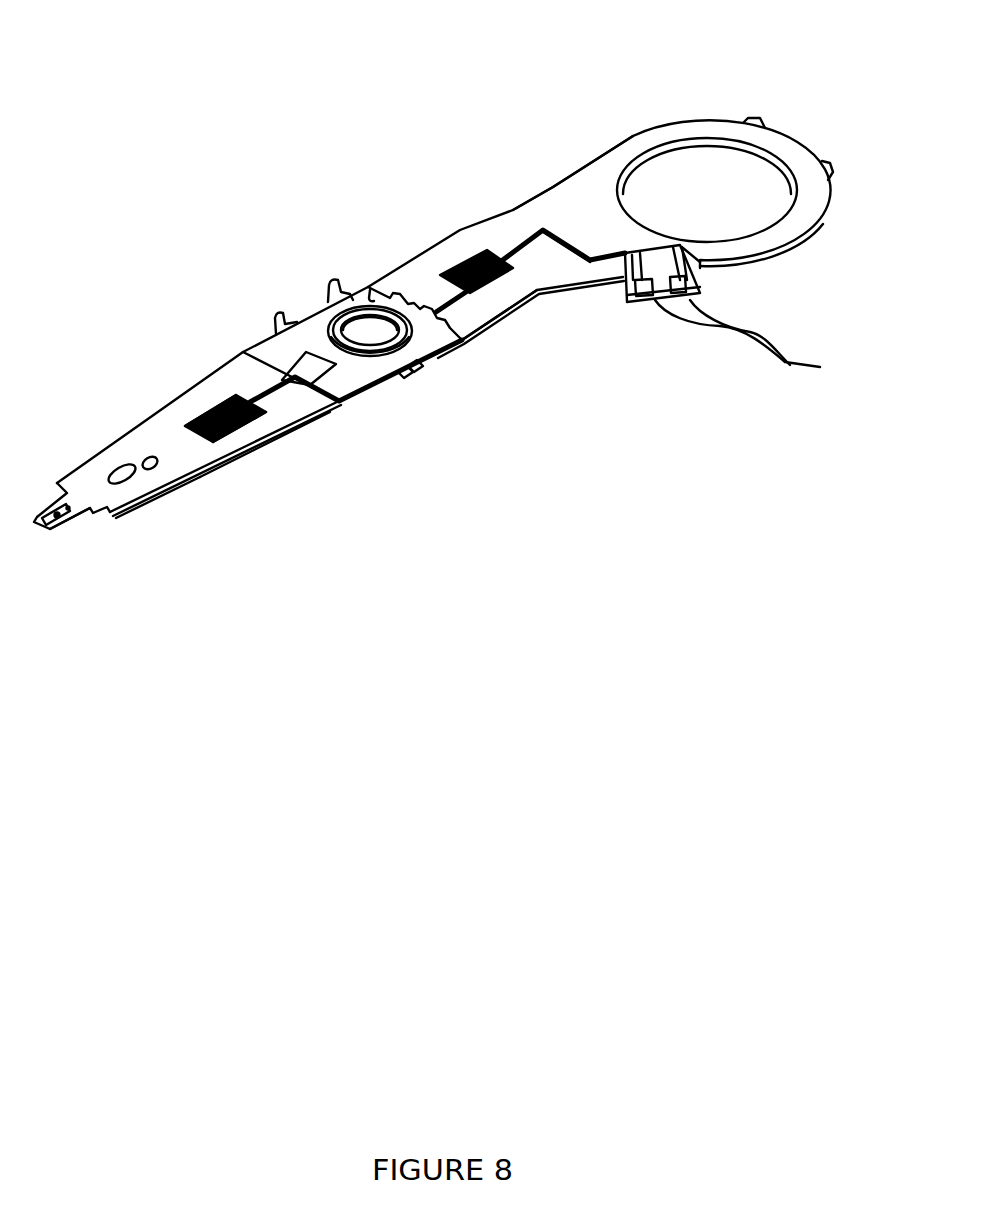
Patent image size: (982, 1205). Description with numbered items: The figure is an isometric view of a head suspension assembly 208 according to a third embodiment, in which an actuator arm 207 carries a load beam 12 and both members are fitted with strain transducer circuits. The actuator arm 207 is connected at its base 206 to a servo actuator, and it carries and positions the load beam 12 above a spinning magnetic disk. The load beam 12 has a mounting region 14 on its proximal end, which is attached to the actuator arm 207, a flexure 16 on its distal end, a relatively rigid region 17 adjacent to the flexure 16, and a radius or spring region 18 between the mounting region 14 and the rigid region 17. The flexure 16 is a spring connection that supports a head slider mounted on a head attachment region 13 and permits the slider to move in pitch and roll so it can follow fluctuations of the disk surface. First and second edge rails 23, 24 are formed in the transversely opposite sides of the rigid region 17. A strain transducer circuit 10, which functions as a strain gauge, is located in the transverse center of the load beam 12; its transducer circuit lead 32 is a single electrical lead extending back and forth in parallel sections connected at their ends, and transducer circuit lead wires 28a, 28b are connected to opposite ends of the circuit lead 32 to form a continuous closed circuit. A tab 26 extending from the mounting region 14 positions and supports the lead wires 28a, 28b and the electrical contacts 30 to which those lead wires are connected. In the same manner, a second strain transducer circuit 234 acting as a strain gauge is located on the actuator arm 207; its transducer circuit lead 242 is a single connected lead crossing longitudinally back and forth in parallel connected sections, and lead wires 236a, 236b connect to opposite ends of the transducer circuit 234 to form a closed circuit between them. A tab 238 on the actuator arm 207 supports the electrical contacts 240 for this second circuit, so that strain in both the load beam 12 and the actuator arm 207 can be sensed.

The strain transducer circuit 10 is at (227, 437).
The load beam 12 is at (307, 155).
The head attachment region 13 is at (42, 528).
The mounting region 14 is at (360, 285).
The flexure 16 is at (72, 530).
The rigid region 17 is at (160, 493).
The spring region 18 is at (265, 347).
The first edge rail 23 is at (120, 433).
The second edge rail 24 is at (187, 467).
The tab 26 is at (437, 353).
The transducer circuit lead wire 28a is at (233, 378).
The transducer circuit lead wire 28b is at (317, 387).
The electrical contacts 30 is at (417, 363).
The transducer circuit lead 32 is at (188, 413).
The base 206 is at (773, 260).
The actuator arm 207 is at (581, 165).
The head suspension assembly 208 is at (597, 527).
The strain transducer circuit 234 is at (513, 287).
The lead wire 236a is at (563, 257).
The lead wire 236b is at (573, 237).
The tab 238 is at (627, 305).
The electrical contacts 240 is at (768, 341).
The transducer circuit lead 242 is at (480, 250).